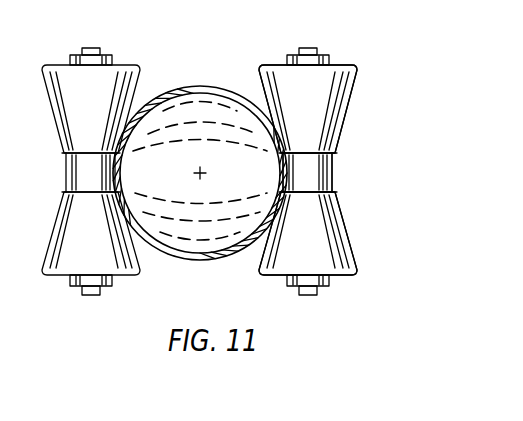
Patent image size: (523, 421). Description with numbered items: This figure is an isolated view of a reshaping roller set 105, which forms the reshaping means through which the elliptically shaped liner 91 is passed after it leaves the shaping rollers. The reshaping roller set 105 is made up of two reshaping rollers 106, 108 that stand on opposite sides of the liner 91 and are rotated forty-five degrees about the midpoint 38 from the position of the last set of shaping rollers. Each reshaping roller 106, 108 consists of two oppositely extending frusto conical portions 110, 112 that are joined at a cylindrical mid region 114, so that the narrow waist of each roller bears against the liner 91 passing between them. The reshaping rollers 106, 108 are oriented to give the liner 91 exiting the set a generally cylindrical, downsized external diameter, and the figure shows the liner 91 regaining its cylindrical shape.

The reshaping roller set 105 is at (371, 57).
The reshaping roller 106 is at (68, 77).
The reshaping roller 108 is at (272, 72).
The frusto conical portion 110 is at (323, 88).
The frusto conical portion 112 is at (333, 233).
The cylindrical mid region 114 is at (333, 172).
The midpoint 38 is at (200, 172).
The liner 91 is at (175, 92).